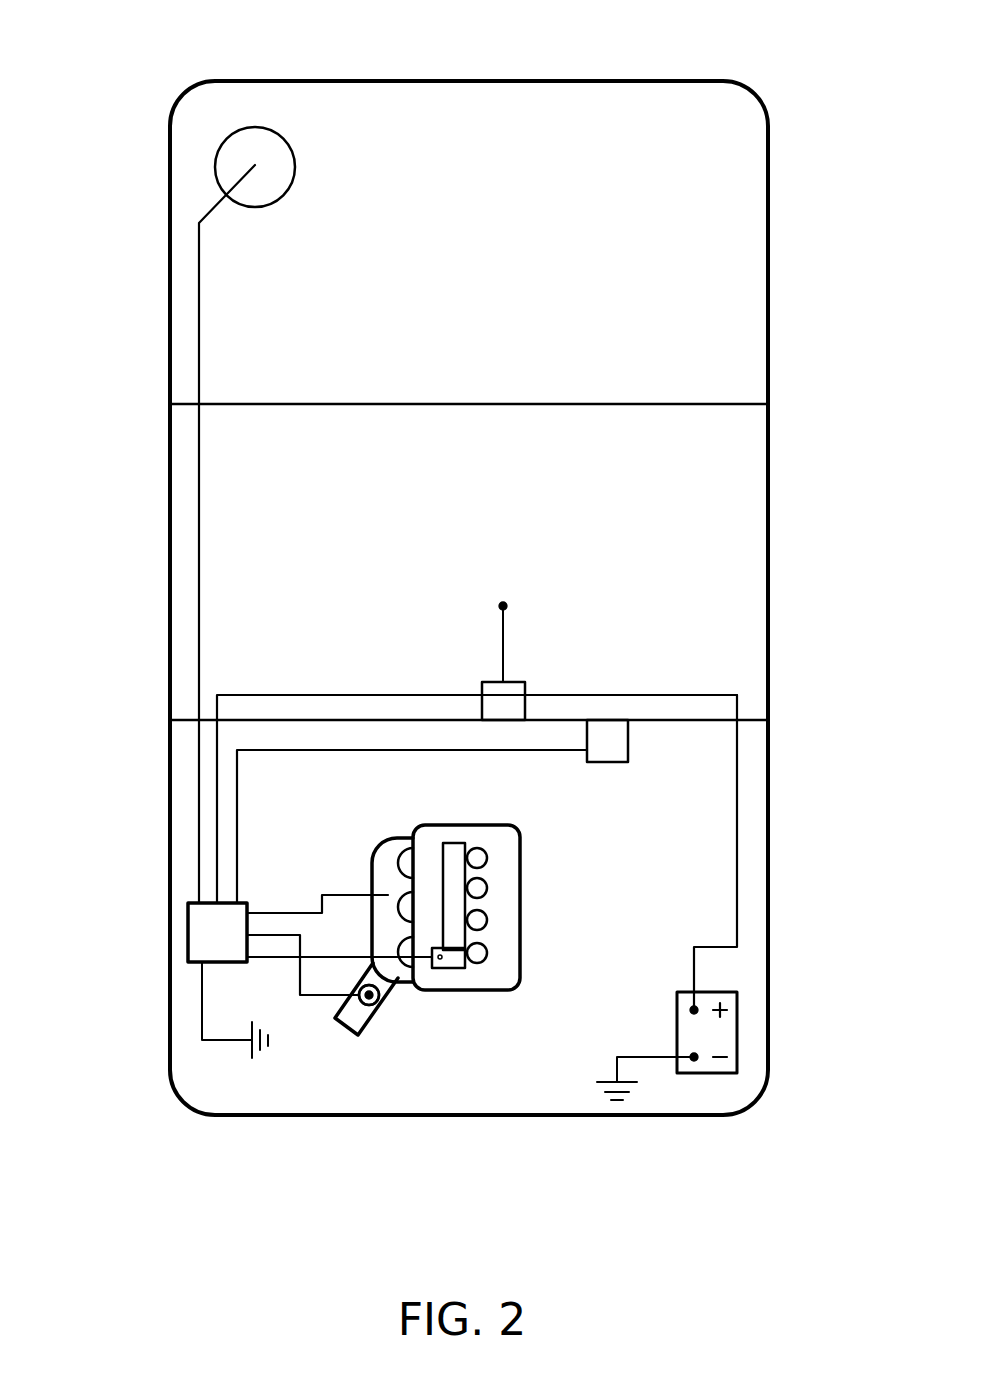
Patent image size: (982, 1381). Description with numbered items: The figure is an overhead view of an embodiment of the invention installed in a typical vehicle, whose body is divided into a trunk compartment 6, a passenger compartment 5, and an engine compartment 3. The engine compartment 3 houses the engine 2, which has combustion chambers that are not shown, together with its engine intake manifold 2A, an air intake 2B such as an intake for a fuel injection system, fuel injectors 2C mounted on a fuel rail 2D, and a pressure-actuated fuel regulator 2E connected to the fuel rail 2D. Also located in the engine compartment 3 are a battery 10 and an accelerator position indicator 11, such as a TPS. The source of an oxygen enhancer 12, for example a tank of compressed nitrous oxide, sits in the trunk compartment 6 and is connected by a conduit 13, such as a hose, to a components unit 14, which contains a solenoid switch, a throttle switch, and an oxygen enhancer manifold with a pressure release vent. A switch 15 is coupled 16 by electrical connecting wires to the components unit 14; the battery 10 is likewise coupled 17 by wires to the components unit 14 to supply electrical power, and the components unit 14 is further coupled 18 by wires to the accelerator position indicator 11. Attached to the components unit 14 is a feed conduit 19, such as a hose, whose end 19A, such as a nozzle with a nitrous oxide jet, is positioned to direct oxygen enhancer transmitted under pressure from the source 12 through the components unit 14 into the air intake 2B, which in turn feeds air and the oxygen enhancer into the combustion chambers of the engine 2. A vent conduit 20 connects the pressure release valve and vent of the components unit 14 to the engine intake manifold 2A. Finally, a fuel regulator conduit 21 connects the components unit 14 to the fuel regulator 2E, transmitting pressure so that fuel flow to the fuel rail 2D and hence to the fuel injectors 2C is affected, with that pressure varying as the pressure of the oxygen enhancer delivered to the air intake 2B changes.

The engine 2 is at (523, 975).
The engine intake manifold 2A is at (370, 848).
The air intake 2B is at (358, 1040).
The fuel injectors 2C is at (487, 855).
The fuel rail 2D is at (453, 857).
The fuel regulator 2E is at (447, 963).
The engine compartment 3 is at (552, 1065).
The passenger compartment 5 is at (715, 480).
The trunk compartment 6 is at (715, 257).
The battery 10 is at (723, 1038).
The accelerator position indicator 11 is at (605, 763).
The source of an oxygen enhancer 12 is at (262, 127).
The conduit 13 is at (198, 321).
The components unit 14 is at (207, 928).
The switch 15 is at (490, 680).
The coupling 16 is at (277, 692).
The coupling 17 is at (613, 693).
The coupling 18 is at (263, 753).
The feed conduit 19 is at (318, 990).
The end 19A is at (357, 1037).
The vent conduit 20 is at (278, 910).
The fuel regulator conduit 21 is at (265, 960).